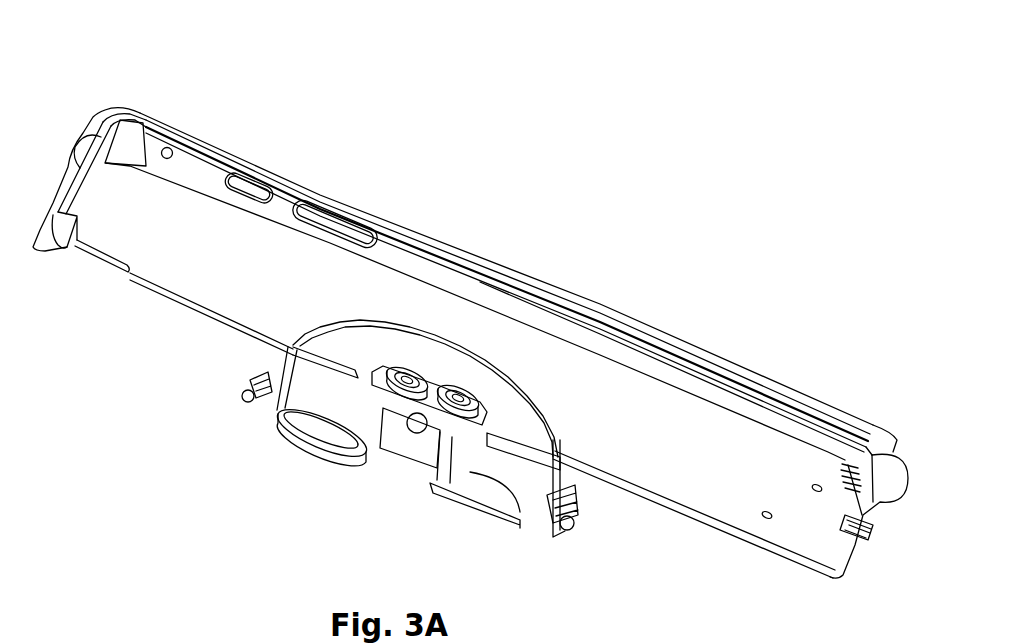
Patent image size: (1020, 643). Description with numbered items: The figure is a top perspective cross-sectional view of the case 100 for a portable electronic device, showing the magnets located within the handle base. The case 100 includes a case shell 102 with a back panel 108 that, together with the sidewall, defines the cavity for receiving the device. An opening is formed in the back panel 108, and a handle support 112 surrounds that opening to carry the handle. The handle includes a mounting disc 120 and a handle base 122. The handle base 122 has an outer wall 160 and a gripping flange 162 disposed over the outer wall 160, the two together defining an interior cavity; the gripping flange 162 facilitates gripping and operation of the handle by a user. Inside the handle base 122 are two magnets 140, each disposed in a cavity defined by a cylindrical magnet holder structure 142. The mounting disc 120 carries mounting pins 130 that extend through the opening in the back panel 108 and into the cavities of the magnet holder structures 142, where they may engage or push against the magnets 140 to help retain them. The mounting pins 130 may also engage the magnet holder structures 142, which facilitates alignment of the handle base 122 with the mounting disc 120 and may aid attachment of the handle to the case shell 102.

The case 100 is at (121, 66).
The case shell 102 is at (763, 378).
The back panel 108 is at (612, 395).
The handle support 112 is at (513, 447).
The mounting disc 120 is at (468, 362).
The handle base 122 is at (250, 400).
The mounting pins 130 is at (350, 412).
The magnet 140 is at (306, 450).
The magnet holder structure 142 is at (373, 460).
The outer wall 160 is at (272, 392).
The gripping flange 162 is at (560, 537).